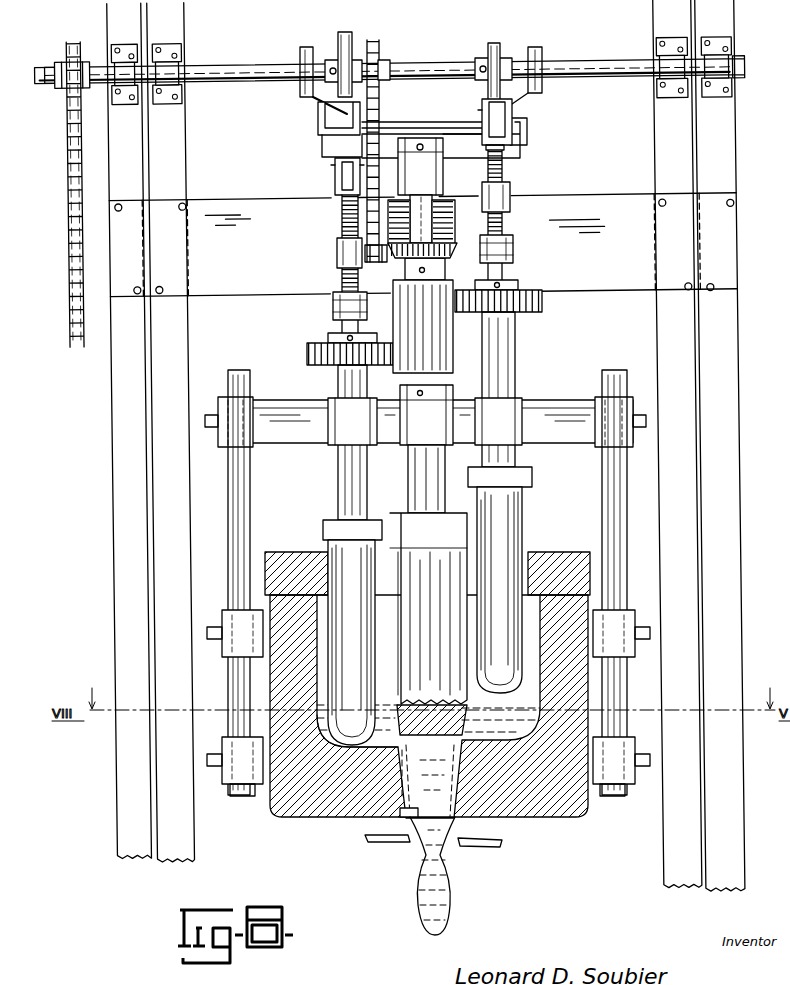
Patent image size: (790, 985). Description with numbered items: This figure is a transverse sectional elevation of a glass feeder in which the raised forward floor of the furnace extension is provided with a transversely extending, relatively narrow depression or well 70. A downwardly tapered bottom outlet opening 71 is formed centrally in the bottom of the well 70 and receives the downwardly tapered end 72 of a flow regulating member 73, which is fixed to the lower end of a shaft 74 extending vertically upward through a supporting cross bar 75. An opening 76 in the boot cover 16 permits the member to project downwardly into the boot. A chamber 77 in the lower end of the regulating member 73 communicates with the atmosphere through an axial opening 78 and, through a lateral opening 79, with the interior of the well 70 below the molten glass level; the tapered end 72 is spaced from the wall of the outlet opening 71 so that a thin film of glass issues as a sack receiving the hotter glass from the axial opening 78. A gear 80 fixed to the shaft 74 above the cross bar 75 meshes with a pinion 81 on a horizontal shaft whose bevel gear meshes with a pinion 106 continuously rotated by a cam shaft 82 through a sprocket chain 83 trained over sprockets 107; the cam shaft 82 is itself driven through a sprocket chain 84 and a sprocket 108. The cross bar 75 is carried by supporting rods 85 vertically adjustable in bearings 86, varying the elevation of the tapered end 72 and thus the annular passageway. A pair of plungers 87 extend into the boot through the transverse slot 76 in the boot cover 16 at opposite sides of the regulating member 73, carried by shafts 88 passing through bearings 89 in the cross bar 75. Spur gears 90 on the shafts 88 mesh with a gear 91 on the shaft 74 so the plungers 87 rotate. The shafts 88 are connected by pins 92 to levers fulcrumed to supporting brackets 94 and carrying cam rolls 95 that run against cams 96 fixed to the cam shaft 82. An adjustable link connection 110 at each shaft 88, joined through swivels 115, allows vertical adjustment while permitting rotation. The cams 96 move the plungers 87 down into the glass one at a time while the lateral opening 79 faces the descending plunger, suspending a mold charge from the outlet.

The boot cover 16 is at (559, 552).
The well 70 is at (502, 758).
The bottom outlet opening 71 is at (450, 832).
The tapered end 72 is at (402, 816).
The flow regulating member 73 is at (410, 541).
The shaft 74 is at (425, 483).
The supporting cross bar 75 is at (570, 400).
The opening 76 is at (478, 562).
The chamber 77 is at (428, 781).
The axial opening 78 is at (418, 838).
The lateral opening 79 is at (404, 760).
The gear 80 is at (449, 252).
The pinion 81 is at (446, 226).
The cam shaft 82 is at (225, 63).
The sprocket chain 83 is at (376, 122).
The sprocket chain 84 is at (74, 129).
The supporting rods 85 is at (250, 523).
The bearings 86 is at (232, 790).
The plungers 87 is at (338, 549).
The shafts 88 is at (340, 467).
The bearings 89 is at (333, 402).
The spur gears 90 is at (307, 356).
The gear 91 is at (453, 348).
The pins 92 is at (335, 178).
The supporting brackets 94 is at (533, 90).
The cam rolls 95 is at (318, 103).
The cams 96 is at (340, 40).
The pinion 106 is at (385, 261).
The sprockets 107 is at (369, 46).
The sprocket 108 is at (70, 58).
The adjustable link connection 110 is at (340, 254).
The swivels 115 is at (332, 306).